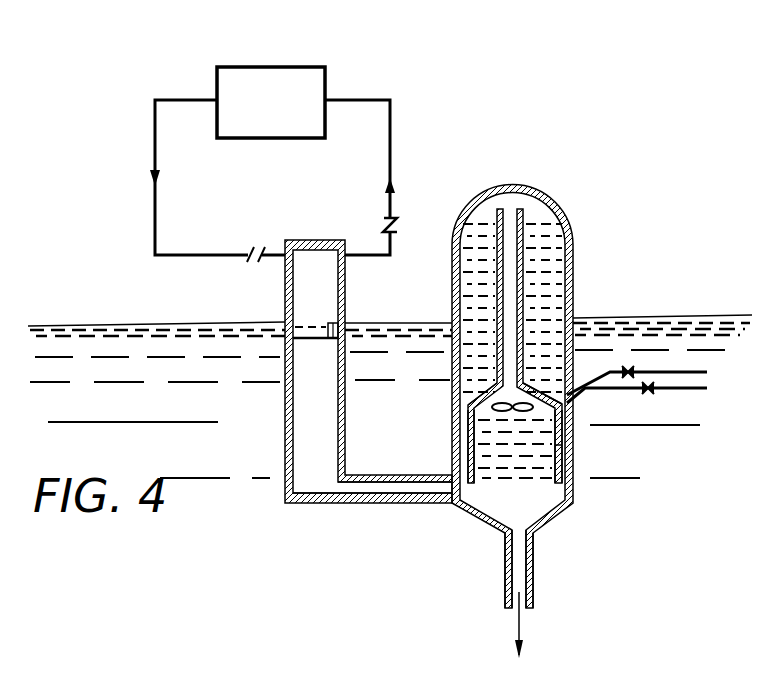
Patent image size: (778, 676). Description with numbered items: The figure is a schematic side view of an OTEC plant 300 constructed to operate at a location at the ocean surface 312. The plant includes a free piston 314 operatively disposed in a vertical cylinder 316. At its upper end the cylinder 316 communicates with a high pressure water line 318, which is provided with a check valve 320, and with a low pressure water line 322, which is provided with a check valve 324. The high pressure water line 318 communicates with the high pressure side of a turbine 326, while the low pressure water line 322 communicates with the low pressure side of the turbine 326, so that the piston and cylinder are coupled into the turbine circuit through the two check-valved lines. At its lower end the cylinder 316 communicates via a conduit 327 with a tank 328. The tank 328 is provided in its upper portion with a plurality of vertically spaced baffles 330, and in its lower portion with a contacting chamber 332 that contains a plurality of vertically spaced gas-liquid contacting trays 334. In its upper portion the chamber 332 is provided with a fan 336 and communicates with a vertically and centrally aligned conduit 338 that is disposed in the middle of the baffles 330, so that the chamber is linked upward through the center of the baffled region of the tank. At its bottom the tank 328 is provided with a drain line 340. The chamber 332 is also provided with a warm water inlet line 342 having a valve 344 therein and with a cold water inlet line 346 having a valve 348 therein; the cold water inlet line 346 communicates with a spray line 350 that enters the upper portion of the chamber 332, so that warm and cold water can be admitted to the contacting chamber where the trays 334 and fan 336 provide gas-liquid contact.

The OTEC plant 300 is at (519, 404).
The ocean surface 312 is at (193, 327).
The free piston 314 is at (336, 325).
The vertical cylinder 316 is at (293, 416).
The high pressure water line 318 is at (390, 133).
The check valve 320 is at (386, 222).
The low pressure water line 322 is at (155, 133).
The check valve 324 is at (258, 256).
The turbine 326 is at (276, 72).
The conduit 327 is at (412, 484).
The tank 328 is at (573, 251).
The baffles 330 is at (548, 297).
The contacting chamber 332 is at (468, 437).
The gas-liquid contacting trays 334 is at (562, 452).
The fan 336 is at (468, 407).
The conduit 338 is at (527, 214).
The drain line 340 is at (505, 568).
The warm water inlet line 342 is at (680, 372).
The valve 344 is at (640, 357).
The cold water inlet line 346 is at (700, 390).
The valve 348 is at (650, 393).
The spray line 350 is at (550, 411).